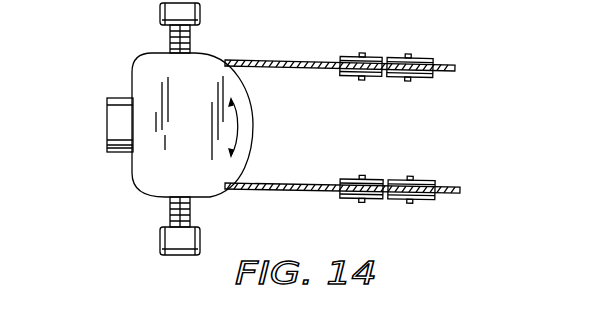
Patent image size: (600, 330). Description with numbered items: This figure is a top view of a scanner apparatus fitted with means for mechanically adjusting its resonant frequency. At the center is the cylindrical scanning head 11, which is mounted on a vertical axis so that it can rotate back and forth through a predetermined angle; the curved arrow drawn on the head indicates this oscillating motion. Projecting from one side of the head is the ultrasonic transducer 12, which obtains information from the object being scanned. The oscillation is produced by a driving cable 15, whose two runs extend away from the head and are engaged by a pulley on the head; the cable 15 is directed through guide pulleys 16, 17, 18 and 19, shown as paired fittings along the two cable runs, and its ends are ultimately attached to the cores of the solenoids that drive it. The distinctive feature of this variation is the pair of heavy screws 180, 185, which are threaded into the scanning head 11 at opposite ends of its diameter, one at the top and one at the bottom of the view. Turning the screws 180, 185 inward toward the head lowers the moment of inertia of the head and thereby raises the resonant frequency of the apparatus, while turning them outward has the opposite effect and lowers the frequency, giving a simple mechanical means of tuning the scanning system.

The scanning head 11 is at (194, 139).
The ultrasonic transducer 12 is at (124, 132).
The driving cable 15 is at (453, 69).
The guide pulley 16 is at (433, 198).
The guide pulley 17 is at (348, 198).
The guide pulley 18 is at (393, 58).
The guide pulley 19 is at (347, 58).
The heavy screw 180 is at (160, 14).
The heavy screw 185 is at (165, 250).